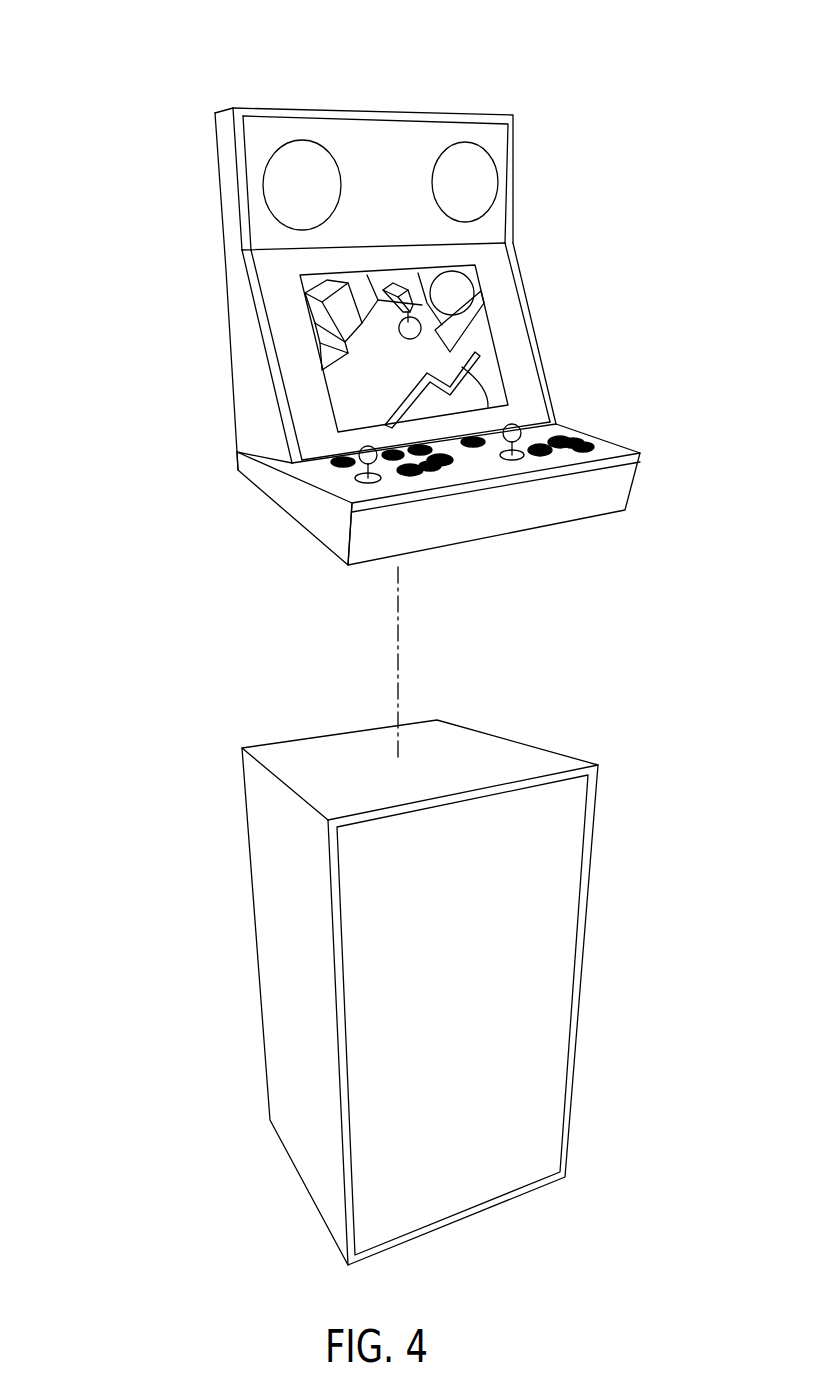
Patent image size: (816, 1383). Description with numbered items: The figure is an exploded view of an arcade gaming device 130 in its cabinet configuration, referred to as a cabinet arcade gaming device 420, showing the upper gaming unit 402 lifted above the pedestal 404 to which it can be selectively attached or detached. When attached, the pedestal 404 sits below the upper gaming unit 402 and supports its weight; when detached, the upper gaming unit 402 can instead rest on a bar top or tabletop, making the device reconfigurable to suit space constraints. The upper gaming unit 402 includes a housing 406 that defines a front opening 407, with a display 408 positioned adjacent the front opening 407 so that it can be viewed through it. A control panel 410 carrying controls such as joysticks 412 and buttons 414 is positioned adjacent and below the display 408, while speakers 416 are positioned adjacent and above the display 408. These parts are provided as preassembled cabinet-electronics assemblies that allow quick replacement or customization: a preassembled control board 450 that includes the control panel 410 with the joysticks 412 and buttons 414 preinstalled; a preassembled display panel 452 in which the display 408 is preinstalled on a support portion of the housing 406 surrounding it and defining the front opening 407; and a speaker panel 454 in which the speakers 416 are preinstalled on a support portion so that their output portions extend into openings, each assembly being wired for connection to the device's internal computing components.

The arcade gaming device 130 is at (108, 76).
The upper gaming unit 402 is at (250, 365).
The pedestal 404 is at (292, 1023).
The housing 406 is at (275, 288).
The front opening 407 is at (500, 363).
The display 408 is at (490, 333).
The control panel 410 is at (340, 473).
The joysticks 412 is at (515, 432).
The buttons 414 is at (587, 445).
The speakers 416 is at (263, 178).
The cabinet arcade gaming device 420 is at (640, 172).
The preassembled control board 450 is at (633, 470).
The preassembled display panel 452 is at (503, 288).
The speaker panel 454 is at (387, 130).